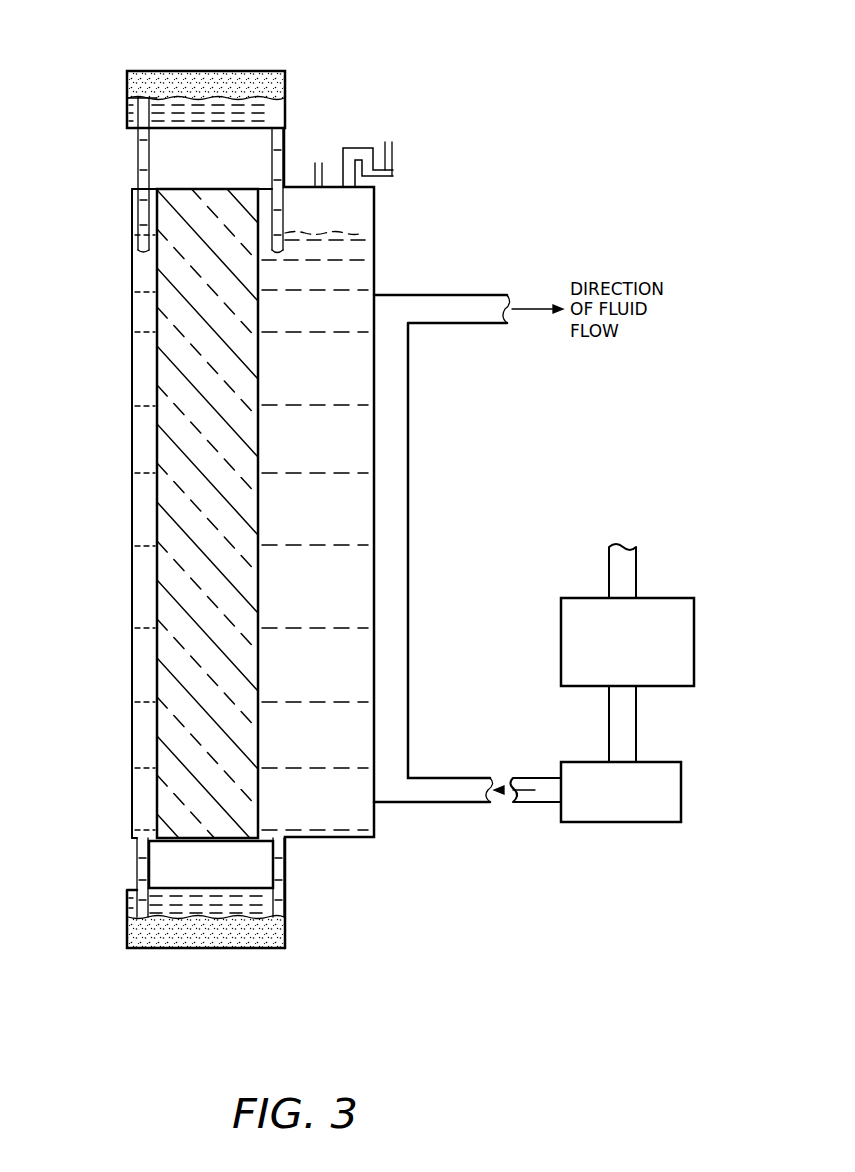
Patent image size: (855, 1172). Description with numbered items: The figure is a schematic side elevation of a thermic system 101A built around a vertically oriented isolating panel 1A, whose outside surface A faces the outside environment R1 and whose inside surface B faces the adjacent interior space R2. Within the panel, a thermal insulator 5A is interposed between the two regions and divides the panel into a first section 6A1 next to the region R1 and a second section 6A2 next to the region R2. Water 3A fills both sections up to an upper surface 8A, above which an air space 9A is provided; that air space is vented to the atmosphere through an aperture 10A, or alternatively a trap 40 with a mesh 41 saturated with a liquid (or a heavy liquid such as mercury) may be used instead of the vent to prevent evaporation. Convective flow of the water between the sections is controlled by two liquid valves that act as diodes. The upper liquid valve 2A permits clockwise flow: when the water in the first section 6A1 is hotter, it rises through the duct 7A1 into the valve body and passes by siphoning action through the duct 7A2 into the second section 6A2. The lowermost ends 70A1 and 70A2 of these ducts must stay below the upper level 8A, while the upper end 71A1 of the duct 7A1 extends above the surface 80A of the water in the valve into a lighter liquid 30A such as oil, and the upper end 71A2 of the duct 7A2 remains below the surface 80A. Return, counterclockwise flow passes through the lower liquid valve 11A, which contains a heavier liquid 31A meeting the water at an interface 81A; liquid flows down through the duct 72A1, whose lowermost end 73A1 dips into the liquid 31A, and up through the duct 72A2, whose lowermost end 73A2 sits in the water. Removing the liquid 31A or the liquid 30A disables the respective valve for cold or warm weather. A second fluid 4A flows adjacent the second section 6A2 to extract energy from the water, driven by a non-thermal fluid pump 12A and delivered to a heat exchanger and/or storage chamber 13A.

The thermic system 101A is at (505, 170).
The liquid valve 2A is at (277, 70).
The liquid 30A is at (200, 78).
The upper surface 80A is at (168, 98).
The upper end of duct 7A1 71A1 is at (133, 97).
The upper end of duct 7A2 71A2 is at (273, 125).
The water 3A is at (273, 113).
The tube or duct 7A1 is at (137, 164).
The tube or duct 7A2 is at (271, 156).
The lowermost end of duct 7A1 70A1 is at (143, 249).
The lowermost end of duct 7A2 70A2 is at (280, 253).
The thermal insulator 5A is at (180, 429).
The first section 6A1 is at (142, 576).
The second section 6A2 is at (358, 455).
The air space 9A is at (360, 211).
The upper surface 8A is at (350, 234).
The aperture 10A is at (333, 164).
The trap 40 is at (357, 150).
The mesh 41 is at (394, 170).
The inside surface B is at (374, 504).
The second fluid 4A is at (392, 378).
The outside environment R1 is at (82, 421).
The space adjacent inside surface R2 is at (403, 417).
The outside surface A is at (132, 325).
The isolating panel 1A is at (132, 530).
The non-thermal fluid pump 12A is at (684, 793).
The heat exchanger and/or storage chamber 13A is at (698, 640).
The duct 72A1 is at (137, 866).
The duct 72A2 is at (287, 863).
The lowermost end of duct 72A2 73A2 is at (278, 888).
The lowermost end of duct 72A1 73A1 is at (145, 923).
The liquid 31A is at (193, 937).
The liquid valve 11A is at (127, 948).
The interface 81A is at (240, 923).